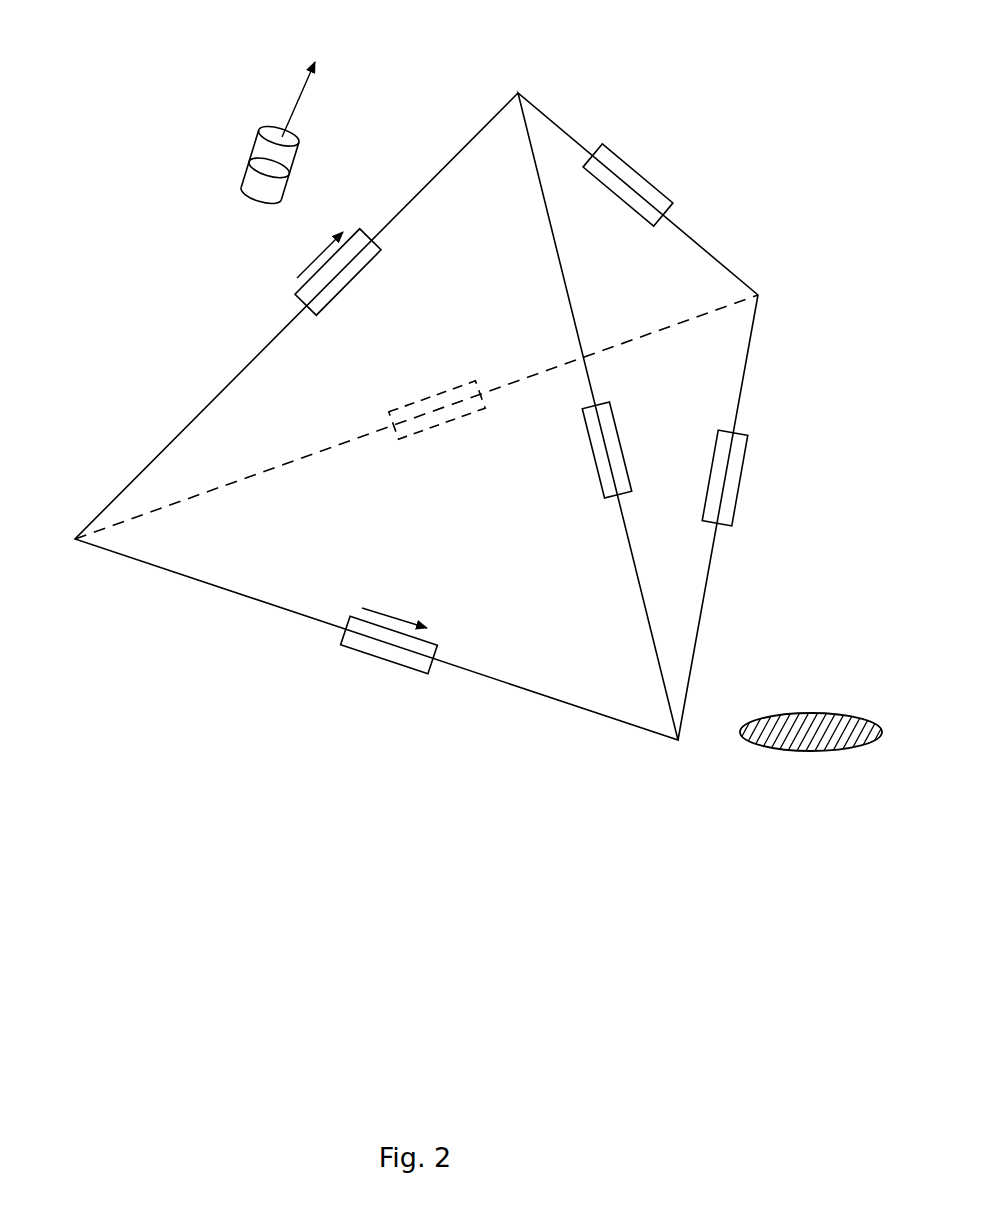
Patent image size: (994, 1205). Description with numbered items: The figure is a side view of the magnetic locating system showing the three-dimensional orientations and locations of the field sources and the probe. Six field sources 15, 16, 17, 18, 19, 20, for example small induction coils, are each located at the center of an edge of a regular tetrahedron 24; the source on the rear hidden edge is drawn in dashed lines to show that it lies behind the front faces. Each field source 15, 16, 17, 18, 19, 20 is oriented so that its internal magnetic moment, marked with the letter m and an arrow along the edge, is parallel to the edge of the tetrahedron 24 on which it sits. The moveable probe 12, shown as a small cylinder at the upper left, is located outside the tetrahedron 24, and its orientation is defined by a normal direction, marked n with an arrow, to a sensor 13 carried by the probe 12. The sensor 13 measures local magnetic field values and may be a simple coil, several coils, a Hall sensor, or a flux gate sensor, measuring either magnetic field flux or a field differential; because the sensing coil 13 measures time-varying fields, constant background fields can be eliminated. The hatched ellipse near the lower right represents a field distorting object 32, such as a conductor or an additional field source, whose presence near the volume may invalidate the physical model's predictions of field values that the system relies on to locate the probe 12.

The moveable probe 12 is at (243, 170).
The sensor 13 is at (267, 180).
The field source 15 is at (608, 468).
The field source 16 is at (673, 203).
The field source 17 is at (315, 292).
The field source 18 is at (415, 423).
The field source 19 is at (355, 643).
The field source 20 is at (740, 448).
The regular tetrahedron 24 is at (497, 109).
The field distorting object 32 is at (803, 712).